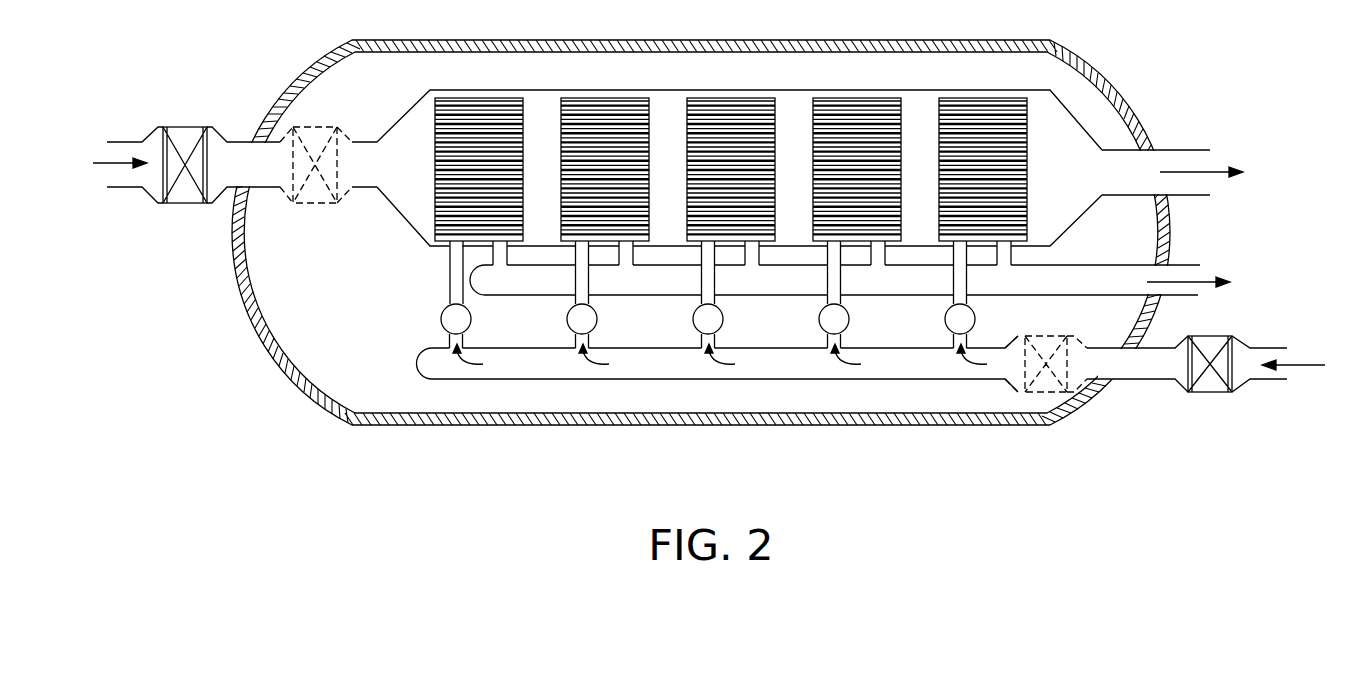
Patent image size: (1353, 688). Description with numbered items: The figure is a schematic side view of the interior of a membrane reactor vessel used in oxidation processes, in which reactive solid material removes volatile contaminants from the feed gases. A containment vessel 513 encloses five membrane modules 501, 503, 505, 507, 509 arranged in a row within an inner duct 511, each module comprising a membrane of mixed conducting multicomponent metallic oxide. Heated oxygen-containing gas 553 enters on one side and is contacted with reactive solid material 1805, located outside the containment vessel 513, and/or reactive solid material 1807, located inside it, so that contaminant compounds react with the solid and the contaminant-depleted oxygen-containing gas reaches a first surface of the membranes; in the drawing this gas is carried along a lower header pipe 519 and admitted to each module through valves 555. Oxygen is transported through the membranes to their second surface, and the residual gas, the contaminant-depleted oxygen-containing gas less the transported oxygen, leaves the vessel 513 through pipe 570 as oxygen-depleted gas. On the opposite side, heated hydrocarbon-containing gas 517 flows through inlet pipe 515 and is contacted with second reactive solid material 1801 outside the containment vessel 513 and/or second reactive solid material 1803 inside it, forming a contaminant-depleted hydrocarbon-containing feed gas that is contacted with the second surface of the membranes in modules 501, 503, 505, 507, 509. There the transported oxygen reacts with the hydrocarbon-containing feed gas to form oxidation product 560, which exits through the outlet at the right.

The membrane module 501 is at (491, 103).
The membrane module 503 is at (625, 103).
The membrane module 505 is at (753, 103).
The membrane module 507 is at (882, 105).
The membrane module 509 is at (990, 108).
The duct housing 511 is at (1072, 113).
The containment vessel 513 is at (260, 343).
The inlet pipe 515 is at (133, 140).
The heated hydrocarbon-containing gas 517 is at (96, 157).
The return manifold pipe 519 is at (743, 380).
The heated oxygen-containing gas 553 is at (1313, 367).
The control valve 555 is at (466, 364).
The oxidation product 560 is at (1184, 150).
The oxygen-depleted gas 570 is at (1208, 265).
The second reactive solid material 1801 is at (188, 197).
The second reactive solid material 1803 is at (310, 204).
The reactive solid material 1805 is at (1213, 389).
The reactive solid material 1807 is at (1047, 383).